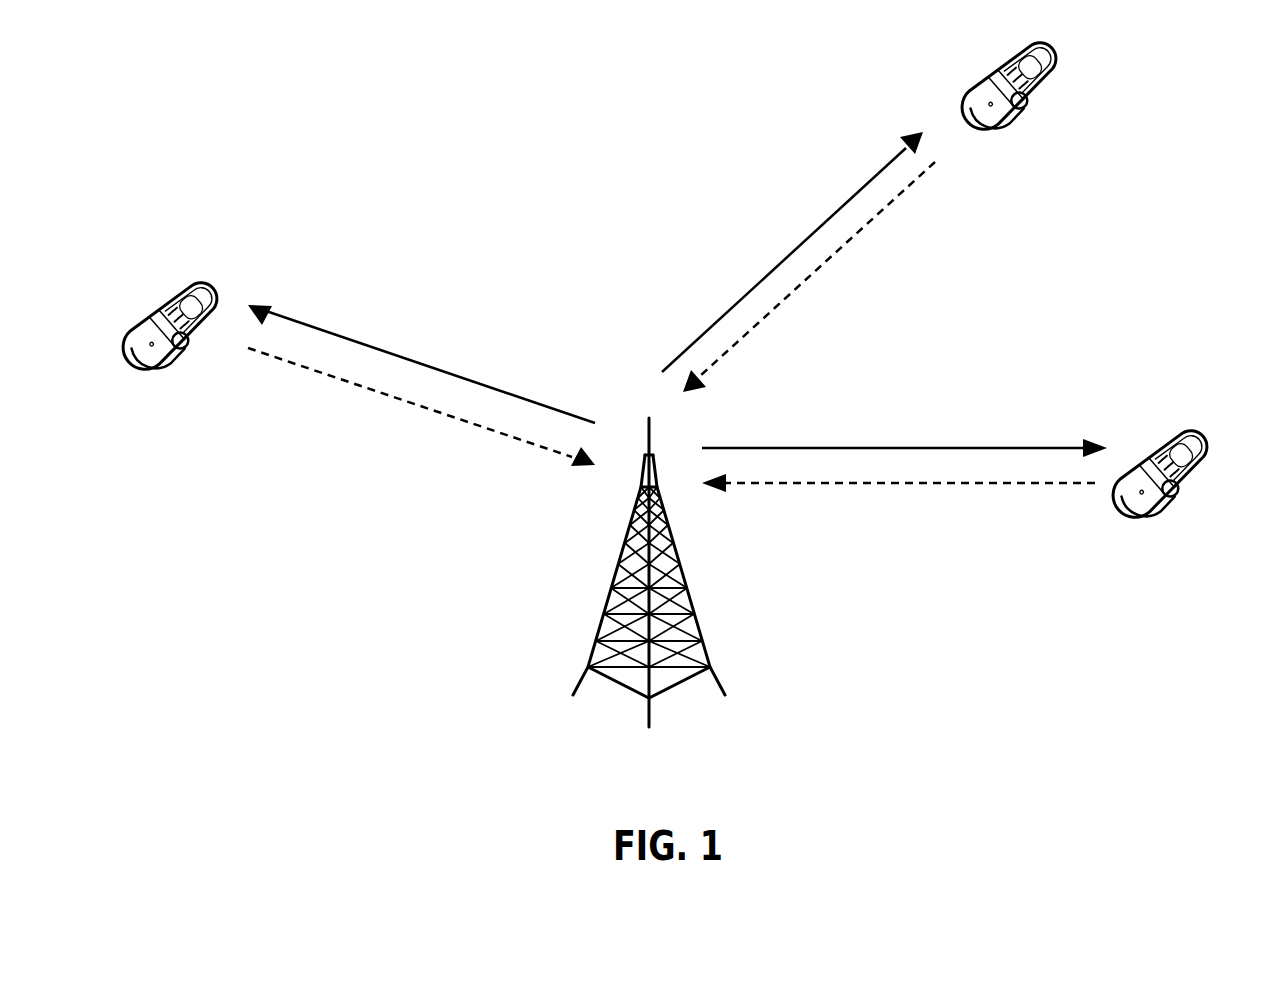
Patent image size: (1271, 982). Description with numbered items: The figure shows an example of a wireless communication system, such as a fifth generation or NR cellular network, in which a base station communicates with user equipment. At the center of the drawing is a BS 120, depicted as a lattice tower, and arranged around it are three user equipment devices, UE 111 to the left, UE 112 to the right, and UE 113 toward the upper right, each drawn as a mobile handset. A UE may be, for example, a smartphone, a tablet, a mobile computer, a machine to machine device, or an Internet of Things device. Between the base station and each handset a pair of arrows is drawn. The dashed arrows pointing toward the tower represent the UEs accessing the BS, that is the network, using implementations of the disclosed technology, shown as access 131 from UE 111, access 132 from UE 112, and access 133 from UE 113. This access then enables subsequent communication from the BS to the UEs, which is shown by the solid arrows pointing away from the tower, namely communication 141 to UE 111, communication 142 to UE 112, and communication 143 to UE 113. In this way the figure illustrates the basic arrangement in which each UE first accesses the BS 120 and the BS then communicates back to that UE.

The user equipment 111 is at (185, 367).
The user equipment 112 is at (1173, 512).
The user equipment 113 is at (1025, 125).
The base station 120 is at (707, 652).
The access to the base station 131 is at (463, 420).
The access to the base station 132 is at (865, 485).
The access to the base station 133 is at (835, 252).
The subsequent communication 141 is at (358, 342).
The subsequent communication 142 is at (1015, 447).
The subsequent communication 143 is at (842, 202).